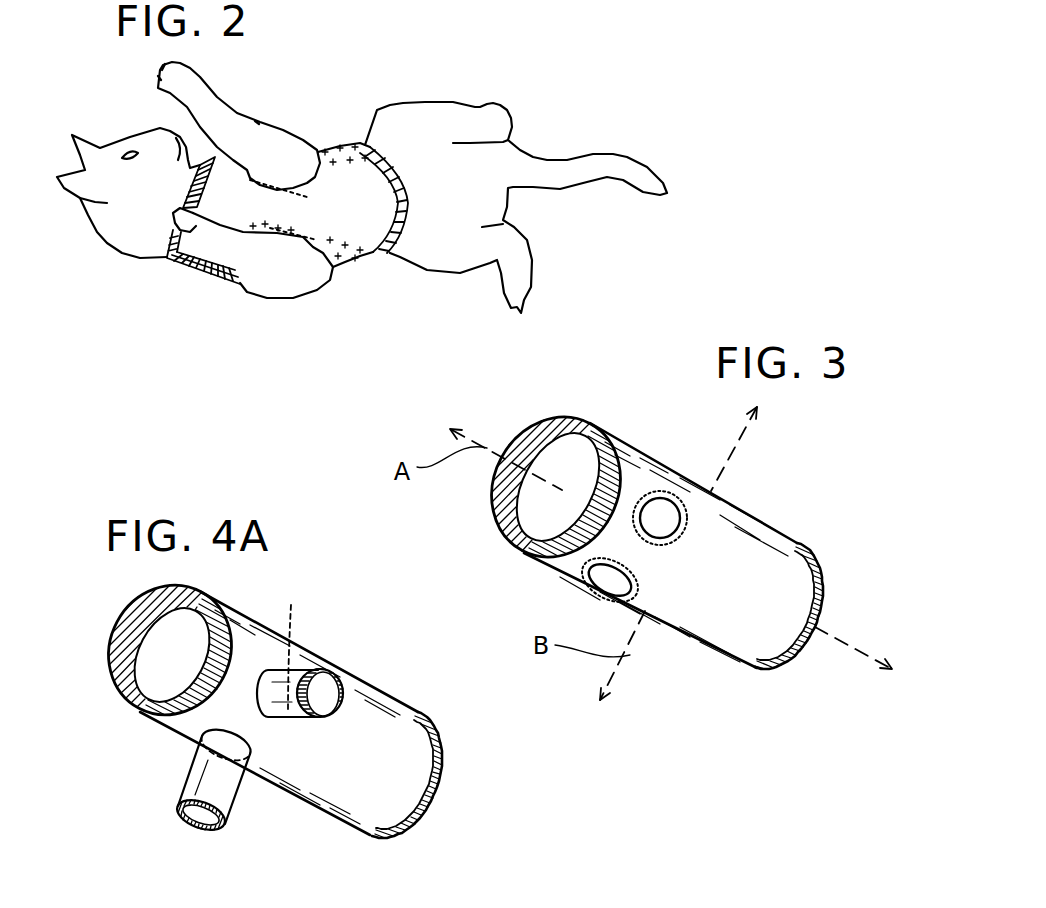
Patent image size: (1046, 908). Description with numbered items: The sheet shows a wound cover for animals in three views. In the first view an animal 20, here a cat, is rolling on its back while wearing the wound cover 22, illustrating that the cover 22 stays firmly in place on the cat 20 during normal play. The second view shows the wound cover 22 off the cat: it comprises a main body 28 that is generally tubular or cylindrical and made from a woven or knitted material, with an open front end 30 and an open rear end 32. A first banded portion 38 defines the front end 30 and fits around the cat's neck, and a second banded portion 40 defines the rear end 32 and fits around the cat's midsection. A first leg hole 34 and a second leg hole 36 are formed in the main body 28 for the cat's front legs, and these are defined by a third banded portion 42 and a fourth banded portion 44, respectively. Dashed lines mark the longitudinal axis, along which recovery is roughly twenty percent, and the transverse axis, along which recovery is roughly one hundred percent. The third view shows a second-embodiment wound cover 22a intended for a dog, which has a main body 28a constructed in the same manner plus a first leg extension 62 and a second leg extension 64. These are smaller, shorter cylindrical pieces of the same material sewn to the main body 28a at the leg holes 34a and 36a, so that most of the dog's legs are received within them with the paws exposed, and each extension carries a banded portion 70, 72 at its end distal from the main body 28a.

In FIG. 2, the animal (cat) 20 is at (549, 109).
In FIG. 2, the wound cover 22 is at (326, 141).
In FIG. 3, the wound cover 22 is at (656, 518).
In FIG. 3, the main body 28 is at (741, 528).
In FIG. 3, the open front end 30 is at (535, 500).
In FIG. 3, the open rear end 32 is at (824, 610).
In FIG. 3, the first leg hole 34 is at (559, 587).
In FIG. 3, the second leg hole 36 is at (658, 461).
In FIG. 3, the first banded portion 38 is at (588, 420).
In FIG. 3, the second banded portion 40 is at (813, 540).
In FIG. 3, the third banded portion 42 is at (577, 575).
In FIG. 3, the fourth banded portion 44 is at (660, 508).
In FIG. 4A, the wound cover 22a is at (271, 708).
In FIG. 4A, the main body 28a is at (386, 690).
In FIG. 4A, the first leg hole 34a is at (200, 747).
In FIG. 4A, the second leg hole 36a is at (291, 605).
In FIG. 4A, the first leg extension 62 is at (166, 791).
In FIG. 4A, the second leg extension 64 is at (335, 659).
In FIG. 4A, the banded portion 70 is at (180, 800).
In FIG. 4A, the banded portion 72 is at (322, 677).